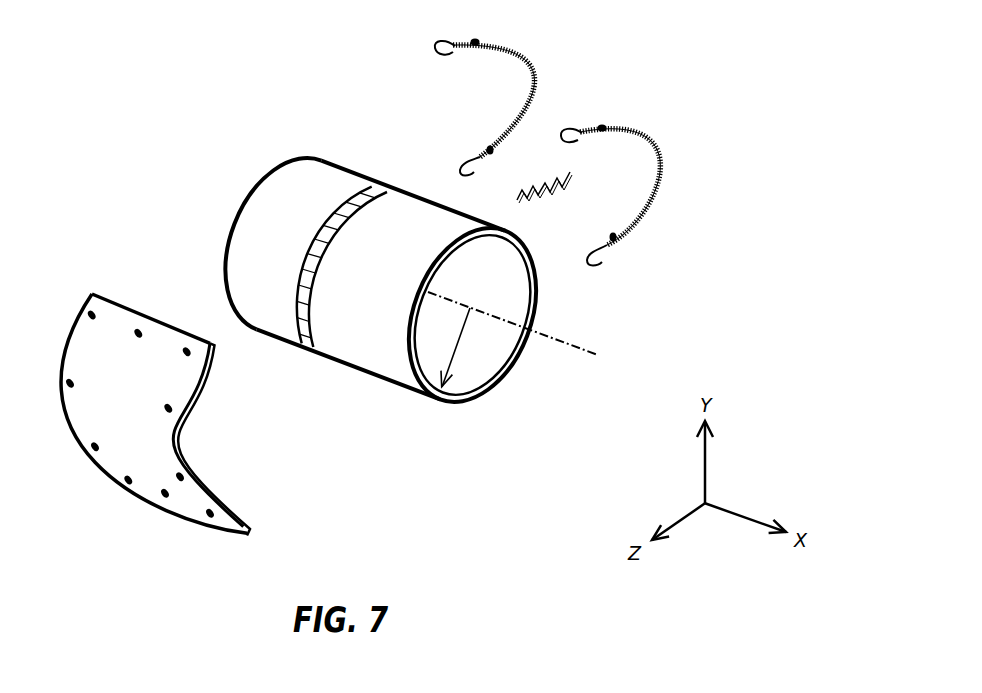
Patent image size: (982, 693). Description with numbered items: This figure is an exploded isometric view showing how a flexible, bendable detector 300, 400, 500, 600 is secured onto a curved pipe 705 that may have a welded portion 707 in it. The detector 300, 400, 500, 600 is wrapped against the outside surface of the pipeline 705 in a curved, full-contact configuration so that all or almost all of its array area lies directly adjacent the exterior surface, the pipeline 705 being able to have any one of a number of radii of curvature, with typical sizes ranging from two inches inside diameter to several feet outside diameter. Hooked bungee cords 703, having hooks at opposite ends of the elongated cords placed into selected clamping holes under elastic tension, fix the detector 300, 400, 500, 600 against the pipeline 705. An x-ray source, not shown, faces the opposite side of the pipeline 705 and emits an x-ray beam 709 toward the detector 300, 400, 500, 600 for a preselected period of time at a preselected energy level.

The bendable detector 300 is at (155, 456).
The bendable detector 400 is at (155, 456).
The bendable detector 500 is at (155, 456).
The bendable detector 600 is at (178, 510).
The hooked bungee cords 703 is at (530, 63).
The pipeline 705 is at (392, 380).
The welded portion 707 is at (307, 333).
The x-ray beam 709 is at (547, 193).